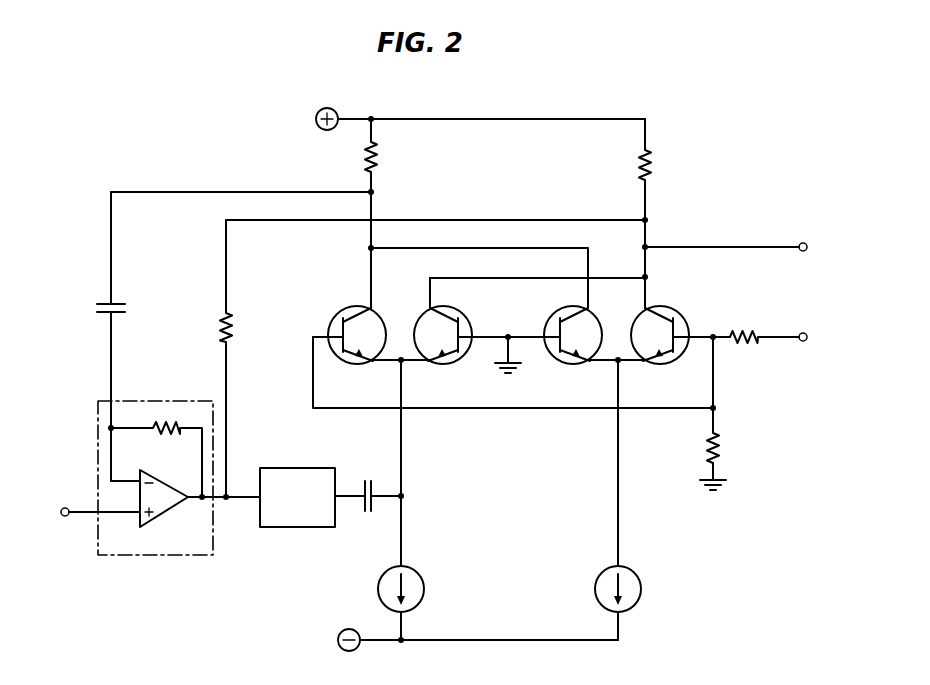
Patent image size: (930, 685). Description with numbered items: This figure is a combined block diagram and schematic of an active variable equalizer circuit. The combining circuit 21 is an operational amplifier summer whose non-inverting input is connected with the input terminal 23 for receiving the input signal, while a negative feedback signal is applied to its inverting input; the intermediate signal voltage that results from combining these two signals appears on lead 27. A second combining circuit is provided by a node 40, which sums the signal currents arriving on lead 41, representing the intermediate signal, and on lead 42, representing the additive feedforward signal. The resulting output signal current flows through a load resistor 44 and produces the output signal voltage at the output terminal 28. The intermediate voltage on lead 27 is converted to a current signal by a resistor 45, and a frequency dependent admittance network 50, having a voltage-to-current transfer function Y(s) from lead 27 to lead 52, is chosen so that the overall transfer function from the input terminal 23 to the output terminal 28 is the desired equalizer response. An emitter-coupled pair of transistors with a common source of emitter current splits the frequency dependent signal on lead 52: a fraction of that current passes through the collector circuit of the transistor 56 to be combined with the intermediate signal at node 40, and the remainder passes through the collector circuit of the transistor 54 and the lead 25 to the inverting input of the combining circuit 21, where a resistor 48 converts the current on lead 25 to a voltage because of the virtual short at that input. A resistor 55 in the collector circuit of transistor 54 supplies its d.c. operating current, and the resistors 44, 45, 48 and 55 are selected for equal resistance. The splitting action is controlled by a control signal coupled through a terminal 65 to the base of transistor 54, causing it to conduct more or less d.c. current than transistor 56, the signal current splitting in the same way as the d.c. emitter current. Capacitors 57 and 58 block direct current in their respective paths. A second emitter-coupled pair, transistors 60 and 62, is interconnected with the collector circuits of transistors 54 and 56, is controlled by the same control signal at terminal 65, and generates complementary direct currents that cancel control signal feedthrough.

The combining circuit 21 is at (179, 478).
The input terminal 23 is at (66, 518).
The lead 25 is at (110, 352).
The lead 27 is at (228, 502).
The output terminal 28 is at (795, 238).
The node 40 is at (650, 245).
The lead 41 is at (510, 218).
The lead 42 is at (611, 275).
The load resistor 44 is at (652, 166).
The resistor 45 is at (219, 331).
The resistor 48 is at (168, 437).
The frequency dependent admittance network 50 is at (296, 529).
The lead 52 is at (350, 500).
The transistor 54 is at (338, 312).
The resistor 55 is at (378, 160).
The transistor 56 is at (422, 314).
The capacitor 57 is at (369, 480).
The capacitor 58 is at (96, 309).
The transistor 60 is at (554, 313).
The transistor 62 is at (672, 303).
The terminal 65 is at (801, 343).